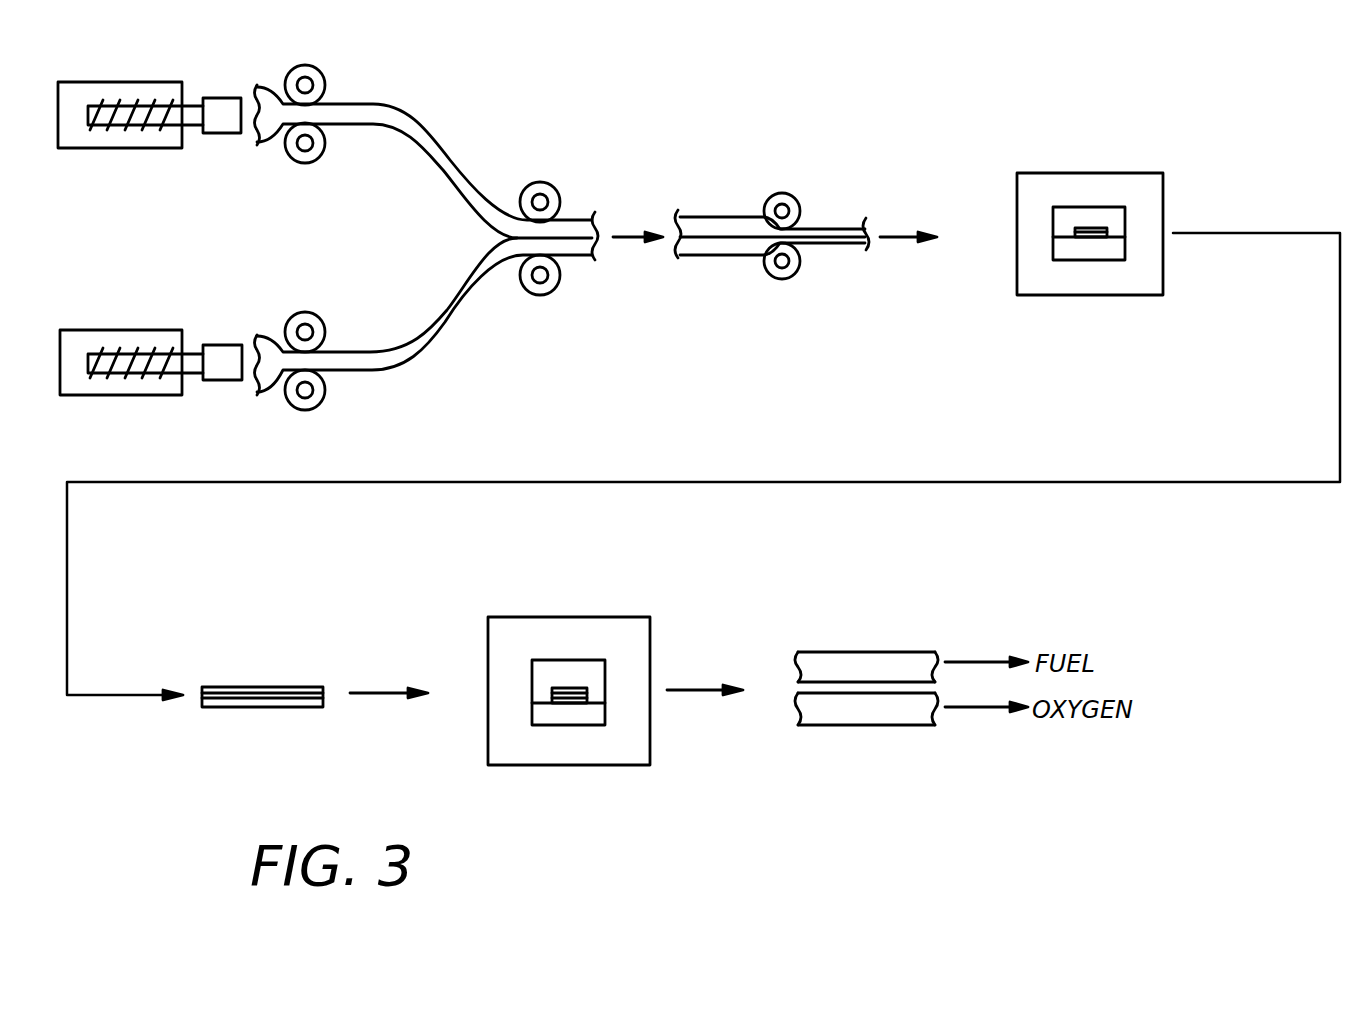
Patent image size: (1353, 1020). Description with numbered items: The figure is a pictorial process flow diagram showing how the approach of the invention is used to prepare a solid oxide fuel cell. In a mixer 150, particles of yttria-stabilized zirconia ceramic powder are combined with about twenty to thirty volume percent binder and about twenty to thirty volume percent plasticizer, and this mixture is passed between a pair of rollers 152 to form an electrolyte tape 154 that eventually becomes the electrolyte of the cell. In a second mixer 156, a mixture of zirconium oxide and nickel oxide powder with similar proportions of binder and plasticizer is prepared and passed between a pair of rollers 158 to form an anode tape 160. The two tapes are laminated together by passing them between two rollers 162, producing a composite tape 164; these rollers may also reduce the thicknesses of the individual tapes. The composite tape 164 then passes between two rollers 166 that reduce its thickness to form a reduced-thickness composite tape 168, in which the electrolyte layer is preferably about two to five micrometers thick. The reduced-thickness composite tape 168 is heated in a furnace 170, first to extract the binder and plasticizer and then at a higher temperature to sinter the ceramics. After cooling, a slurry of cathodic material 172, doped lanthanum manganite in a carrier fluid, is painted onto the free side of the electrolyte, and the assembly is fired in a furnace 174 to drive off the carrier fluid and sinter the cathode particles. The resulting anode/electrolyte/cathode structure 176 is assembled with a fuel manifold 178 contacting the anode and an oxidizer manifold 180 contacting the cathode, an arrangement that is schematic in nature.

The mixer 150 is at (130, 82).
The pair of rollers 152 is at (313, 67).
The electrolyte tape 154 is at (458, 162).
The second mixer 156 is at (120, 396).
The pair of rollers 158 is at (323, 395).
The anode tape 160 is at (450, 320).
The rollers 162 is at (565, 170).
The composite tape 164 is at (580, 254).
The rollers 166 is at (783, 193).
The reduced-thickness composite tape 168 is at (848, 244).
The furnace 170 is at (1068, 296).
The cathodic material 172 is at (263, 687).
The furnace 174 is at (563, 766).
The anode/electrolyte/cathode structure 176 is at (580, 687).
The fuel manifold 178 is at (898, 652).
The oxidizer manifold 180 is at (873, 727).